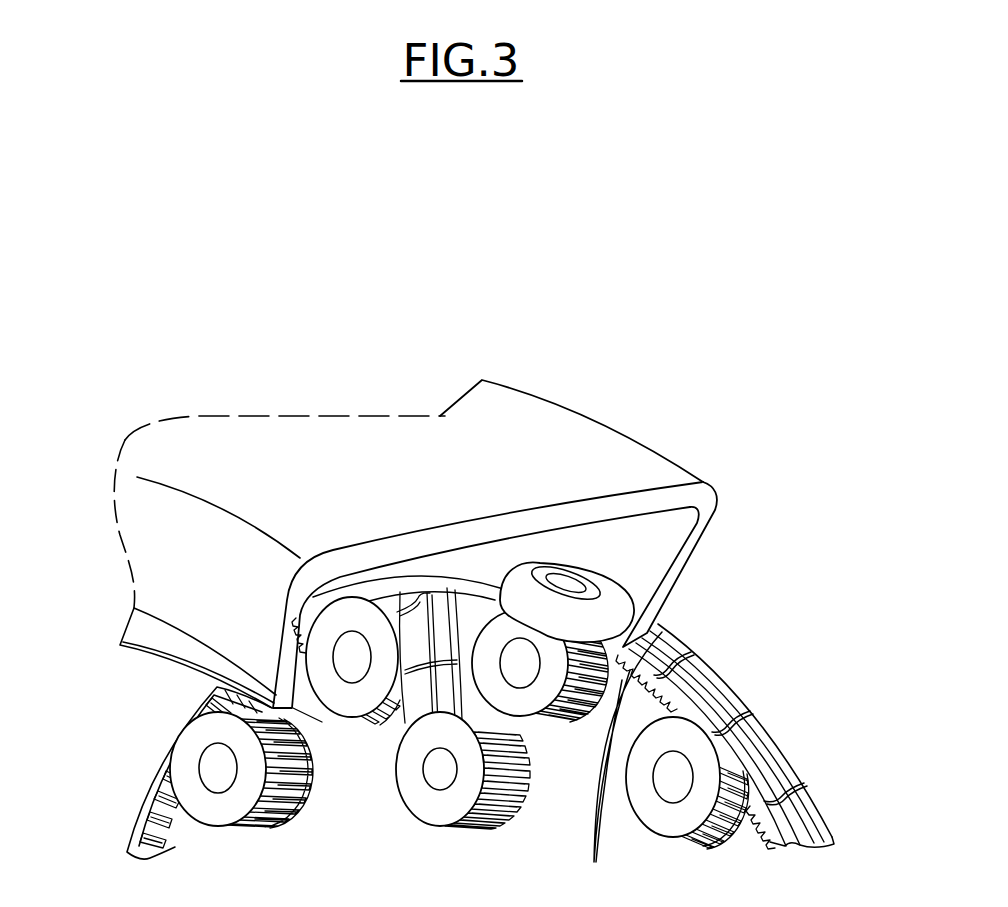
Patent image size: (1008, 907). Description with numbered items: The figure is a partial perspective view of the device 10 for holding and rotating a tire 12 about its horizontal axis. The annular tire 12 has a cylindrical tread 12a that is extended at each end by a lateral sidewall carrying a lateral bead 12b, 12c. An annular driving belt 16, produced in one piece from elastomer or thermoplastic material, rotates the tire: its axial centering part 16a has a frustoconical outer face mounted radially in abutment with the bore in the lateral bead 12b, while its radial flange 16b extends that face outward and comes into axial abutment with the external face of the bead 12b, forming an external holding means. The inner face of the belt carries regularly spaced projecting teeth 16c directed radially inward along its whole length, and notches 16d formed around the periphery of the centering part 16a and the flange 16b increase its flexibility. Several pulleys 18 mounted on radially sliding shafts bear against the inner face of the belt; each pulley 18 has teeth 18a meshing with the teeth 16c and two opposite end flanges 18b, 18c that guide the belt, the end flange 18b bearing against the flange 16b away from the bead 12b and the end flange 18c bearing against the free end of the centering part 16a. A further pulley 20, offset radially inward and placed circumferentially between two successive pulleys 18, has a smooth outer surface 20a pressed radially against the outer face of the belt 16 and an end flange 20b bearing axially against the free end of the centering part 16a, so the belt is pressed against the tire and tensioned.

The device 10 is at (744, 729).
The tire 12 is at (431, 406).
The cylindrical tread 12a is at (322, 437).
The lateral bead 12b is at (643, 630).
The lateral bead 12c is at (155, 622).
The driving belt 16 is at (123, 816).
The axial centering part 16a is at (693, 703).
The radial flange 16b is at (673, 637).
The projecting teeth 16c is at (595, 856).
The notches 16d is at (773, 773).
The pulley 18 is at (439, 724).
The teeth 18a is at (742, 800).
The end flange 18b is at (775, 807).
The end flange 18c is at (647, 803).
The pulley 20 is at (465, 800).
The smooth outer surface 20a is at (517, 790).
The end flange 20b is at (450, 800).